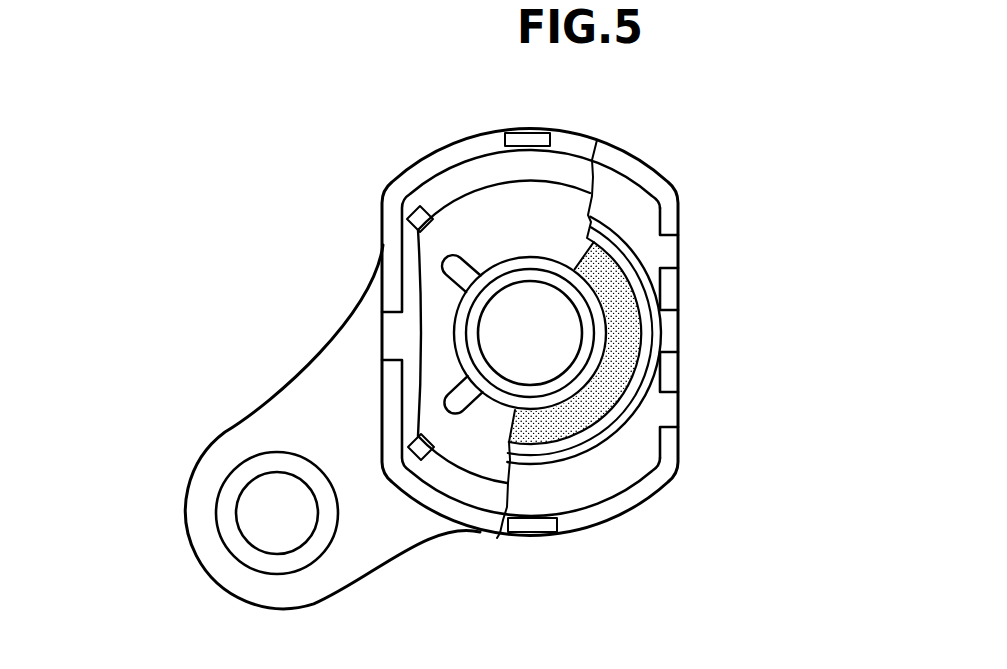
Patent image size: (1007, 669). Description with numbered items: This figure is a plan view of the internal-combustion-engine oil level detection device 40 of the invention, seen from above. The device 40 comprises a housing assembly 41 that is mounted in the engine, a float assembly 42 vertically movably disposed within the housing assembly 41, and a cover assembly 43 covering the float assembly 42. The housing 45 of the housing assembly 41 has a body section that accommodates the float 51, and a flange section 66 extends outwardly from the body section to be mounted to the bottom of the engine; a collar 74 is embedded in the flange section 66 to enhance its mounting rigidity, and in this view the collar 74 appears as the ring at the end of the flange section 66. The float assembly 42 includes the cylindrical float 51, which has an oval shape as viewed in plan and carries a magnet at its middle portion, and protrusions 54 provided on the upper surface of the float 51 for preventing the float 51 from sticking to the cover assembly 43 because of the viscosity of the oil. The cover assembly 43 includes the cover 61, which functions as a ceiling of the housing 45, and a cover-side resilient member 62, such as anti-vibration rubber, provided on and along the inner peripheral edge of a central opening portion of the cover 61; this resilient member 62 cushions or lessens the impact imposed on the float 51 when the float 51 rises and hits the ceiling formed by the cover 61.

The oil level detection device 40 is at (241, 112).
The housing assembly 41 is at (680, 133).
The float assembly 42 is at (481, 147).
The cover assembly 43 is at (713, 435).
The housing 45 is at (703, 167).
The float 51 is at (470, 203).
The protrusions 54 is at (455, 266).
The cover 61 is at (642, 463).
The cover-side resilient member 62 is at (606, 402).
The flange section 66 is at (263, 427).
The collar 74 is at (243, 470).